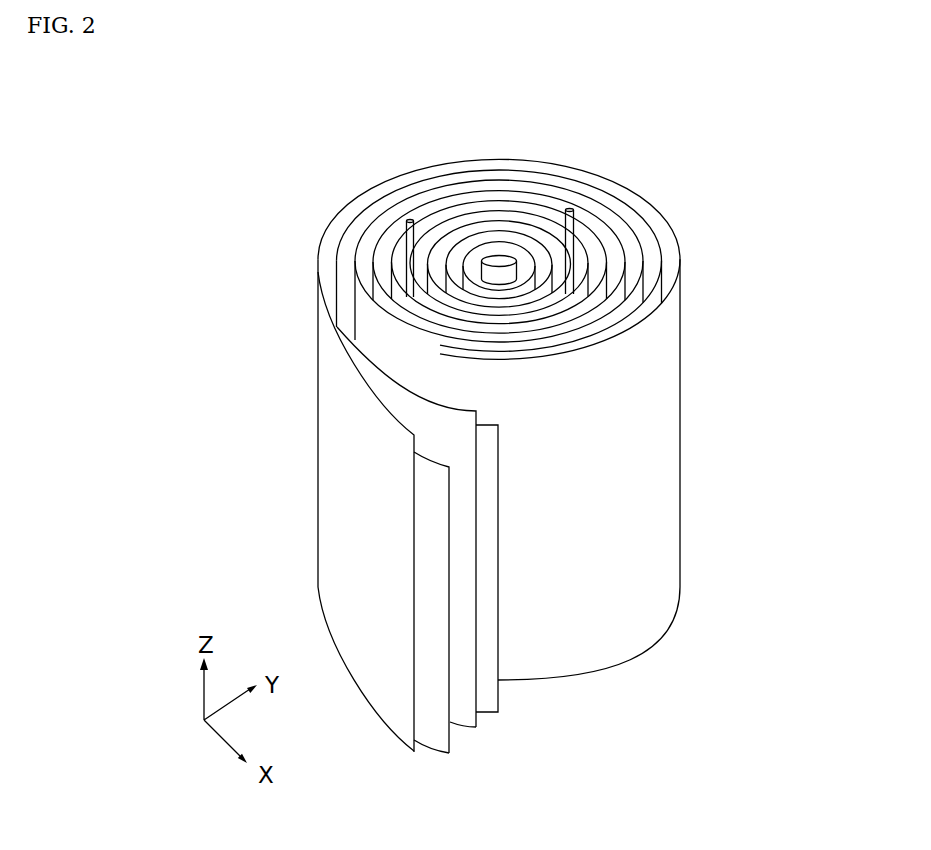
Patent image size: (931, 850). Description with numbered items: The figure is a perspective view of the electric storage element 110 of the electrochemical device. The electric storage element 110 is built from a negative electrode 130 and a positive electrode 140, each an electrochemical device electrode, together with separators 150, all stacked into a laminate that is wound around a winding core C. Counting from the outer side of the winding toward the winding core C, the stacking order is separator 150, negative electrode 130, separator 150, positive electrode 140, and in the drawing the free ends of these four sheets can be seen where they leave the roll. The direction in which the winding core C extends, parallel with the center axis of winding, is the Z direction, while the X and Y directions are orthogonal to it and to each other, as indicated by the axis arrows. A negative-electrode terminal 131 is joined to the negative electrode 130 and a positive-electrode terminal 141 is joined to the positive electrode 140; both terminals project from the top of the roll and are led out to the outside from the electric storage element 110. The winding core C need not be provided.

The electric storage element 110 is at (668, 150).
The negative electrode 130 is at (440, 752).
The negative-electrode terminal 131 is at (397, 225).
The positive electrode 140 is at (490, 712).
The positive-electrode terminal 141 is at (562, 225).
The separator 150 is at (402, 752).
The winding core C is at (497, 262).